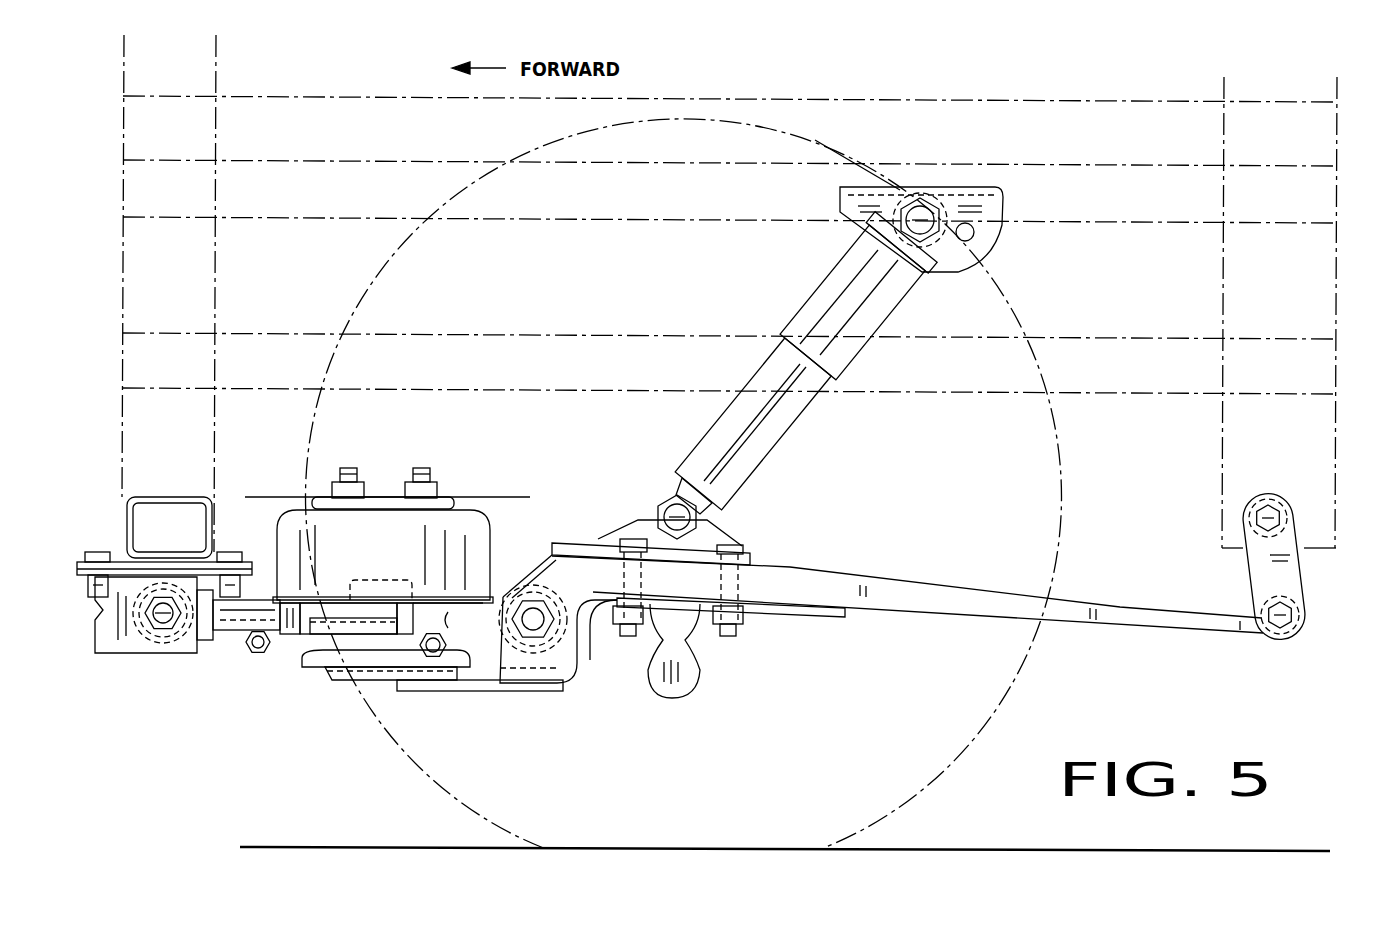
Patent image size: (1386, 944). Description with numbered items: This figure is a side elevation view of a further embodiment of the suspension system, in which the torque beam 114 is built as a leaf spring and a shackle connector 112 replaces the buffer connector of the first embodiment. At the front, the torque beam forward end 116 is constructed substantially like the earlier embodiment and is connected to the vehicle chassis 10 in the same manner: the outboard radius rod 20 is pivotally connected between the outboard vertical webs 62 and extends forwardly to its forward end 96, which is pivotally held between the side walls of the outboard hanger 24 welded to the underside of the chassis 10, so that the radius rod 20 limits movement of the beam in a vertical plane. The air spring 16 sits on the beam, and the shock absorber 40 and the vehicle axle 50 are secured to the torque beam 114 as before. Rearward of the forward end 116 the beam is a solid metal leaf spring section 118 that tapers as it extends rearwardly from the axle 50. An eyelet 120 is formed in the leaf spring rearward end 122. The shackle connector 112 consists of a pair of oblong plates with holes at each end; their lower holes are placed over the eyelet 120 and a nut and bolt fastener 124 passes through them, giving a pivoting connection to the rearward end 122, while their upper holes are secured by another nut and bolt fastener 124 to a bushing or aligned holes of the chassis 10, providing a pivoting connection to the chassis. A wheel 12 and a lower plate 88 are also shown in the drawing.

The vehicle chassis 10 is at (1042, 195).
The wheel 12 is at (525, 150).
The air spring 16 is at (296, 536).
The outboard radius rod 20 is at (312, 623).
The outboard hanger 24 is at (108, 640).
The shock absorber 40 is at (778, 415).
The vehicle axle 50 is at (700, 677).
The outboard vertical webs 62 is at (585, 640).
The lower plate 88 is at (473, 642).
The forward end of outboard radius rod 96 is at (226, 642).
The shackle connector 112 is at (1265, 578).
The torque beam 114 is at (778, 528).
The torque beam forward end 116 is at (362, 733).
The leaf spring section 118 is at (910, 597).
The eyelet 120 is at (1300, 572).
The leaf spring rearward end 122 is at (1296, 642).
The nut and bolt fastener 124 is at (1258, 506).